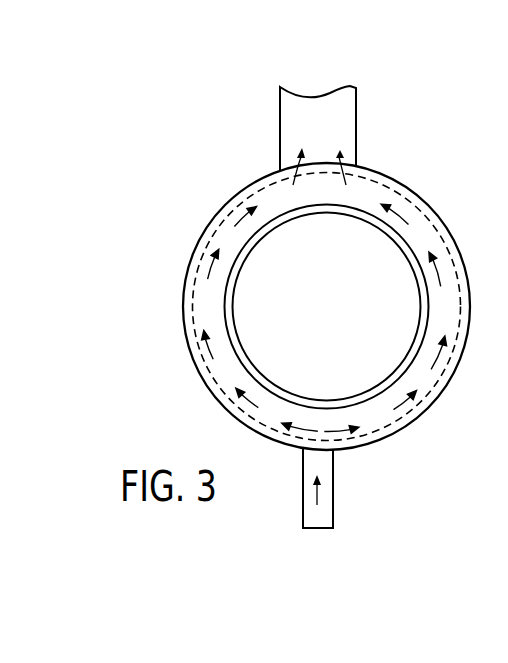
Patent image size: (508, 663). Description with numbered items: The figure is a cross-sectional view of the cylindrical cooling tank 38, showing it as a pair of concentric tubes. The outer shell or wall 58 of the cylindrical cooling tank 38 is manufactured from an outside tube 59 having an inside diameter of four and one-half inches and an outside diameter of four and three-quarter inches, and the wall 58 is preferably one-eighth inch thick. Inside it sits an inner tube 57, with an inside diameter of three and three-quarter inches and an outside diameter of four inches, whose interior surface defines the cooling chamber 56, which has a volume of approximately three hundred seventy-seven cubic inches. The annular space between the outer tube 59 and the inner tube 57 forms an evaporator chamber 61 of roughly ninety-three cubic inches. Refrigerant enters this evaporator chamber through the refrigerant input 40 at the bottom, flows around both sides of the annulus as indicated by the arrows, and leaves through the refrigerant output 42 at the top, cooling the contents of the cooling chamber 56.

The cylindrical cooling tank 38 is at (398, 101).
The refrigerant input 40 is at (334, 522).
The refrigerant output 42 is at (343, 86).
The cooling chamber 56 is at (345, 317).
The inner tube 57 is at (402, 362).
The wall 58 is at (185, 278).
The outside tube 59 is at (455, 372).
The evaporator chamber 61 is at (399, 195).